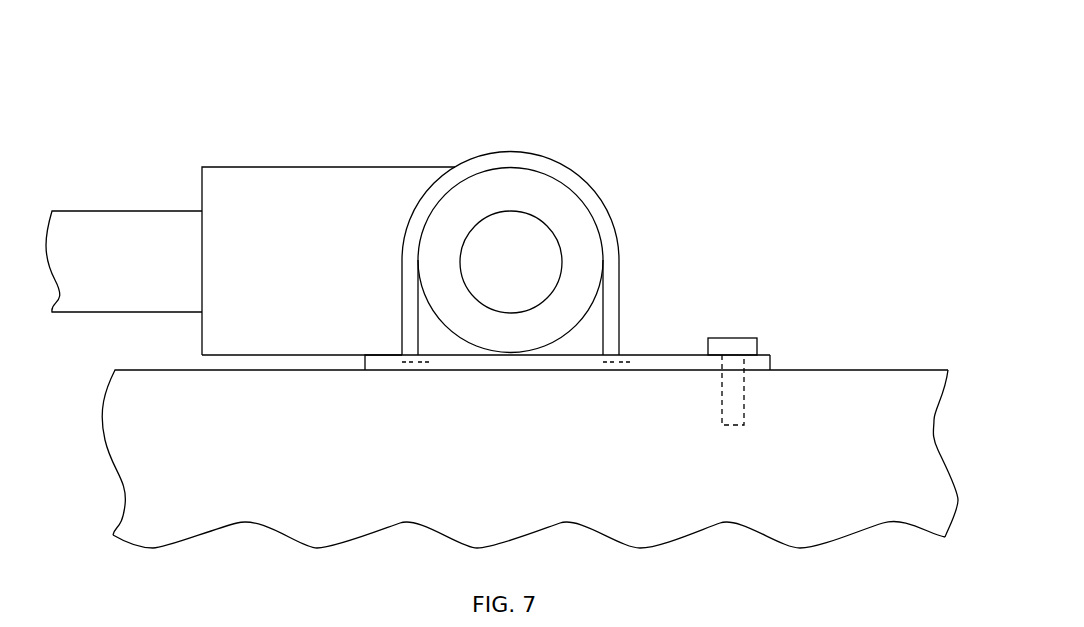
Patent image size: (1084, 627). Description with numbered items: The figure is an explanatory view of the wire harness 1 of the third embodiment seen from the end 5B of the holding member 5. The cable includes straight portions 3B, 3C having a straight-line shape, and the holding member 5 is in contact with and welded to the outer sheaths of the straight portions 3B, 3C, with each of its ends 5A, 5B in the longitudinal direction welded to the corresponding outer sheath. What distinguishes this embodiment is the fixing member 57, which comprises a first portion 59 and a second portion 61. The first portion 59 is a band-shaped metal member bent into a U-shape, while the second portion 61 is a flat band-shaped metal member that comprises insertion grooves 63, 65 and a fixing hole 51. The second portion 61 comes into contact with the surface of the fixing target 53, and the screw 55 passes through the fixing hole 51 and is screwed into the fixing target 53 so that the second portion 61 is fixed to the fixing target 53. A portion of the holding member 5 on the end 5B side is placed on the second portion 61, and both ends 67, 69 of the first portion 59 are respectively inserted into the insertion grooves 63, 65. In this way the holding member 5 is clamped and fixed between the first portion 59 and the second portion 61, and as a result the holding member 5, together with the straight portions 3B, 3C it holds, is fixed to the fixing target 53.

The wire harness 1 is at (305, 167).
The holding member 5 is at (568, 178).
The end 5A is at (243, 190).
The end 5B is at (513, 180).
The straight portion 3B is at (81, 313).
The straight portion 3C is at (523, 313).
The fixing member 57 is at (718, 190).
The first portion 59 is at (607, 218).
The second portion 61 is at (660, 362).
The screw 55 is at (731, 348).
The fixing hole 51 is at (763, 367).
The fixing target 53 is at (908, 390).
The insertion groove 63 is at (427, 365).
The insertion groove 65 is at (618, 362).
The end 67 is at (410, 365).
The end 69 is at (613, 368).